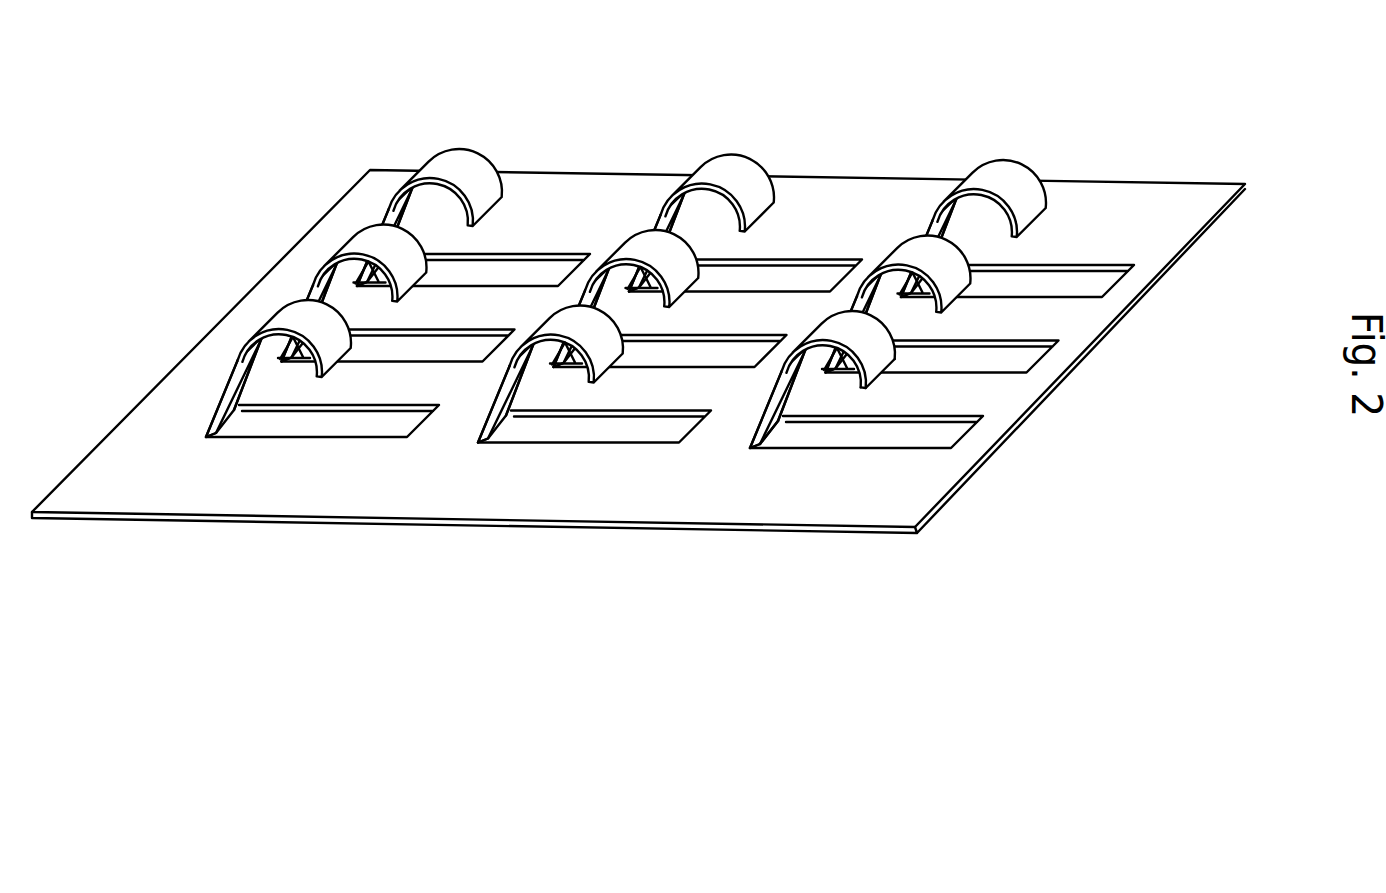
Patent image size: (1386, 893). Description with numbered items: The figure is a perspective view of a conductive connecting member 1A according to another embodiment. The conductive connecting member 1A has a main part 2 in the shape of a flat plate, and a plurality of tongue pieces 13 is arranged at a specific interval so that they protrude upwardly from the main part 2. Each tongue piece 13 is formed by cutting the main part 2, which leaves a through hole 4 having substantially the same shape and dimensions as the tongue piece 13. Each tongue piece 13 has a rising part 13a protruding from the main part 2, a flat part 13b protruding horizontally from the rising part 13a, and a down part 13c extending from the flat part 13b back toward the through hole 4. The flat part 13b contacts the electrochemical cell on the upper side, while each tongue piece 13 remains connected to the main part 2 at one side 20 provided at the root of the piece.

The conductive connecting member 1A is at (1128, 156).
The main part 2 is at (1163, 252).
The through hole 4 is at (520, 268).
The tongue piece 13 is at (482, 149).
The rising part 13a is at (744, 429).
The flat part 13b is at (838, 292).
The down part 13c is at (914, 390).
The one side 20 is at (797, 471).